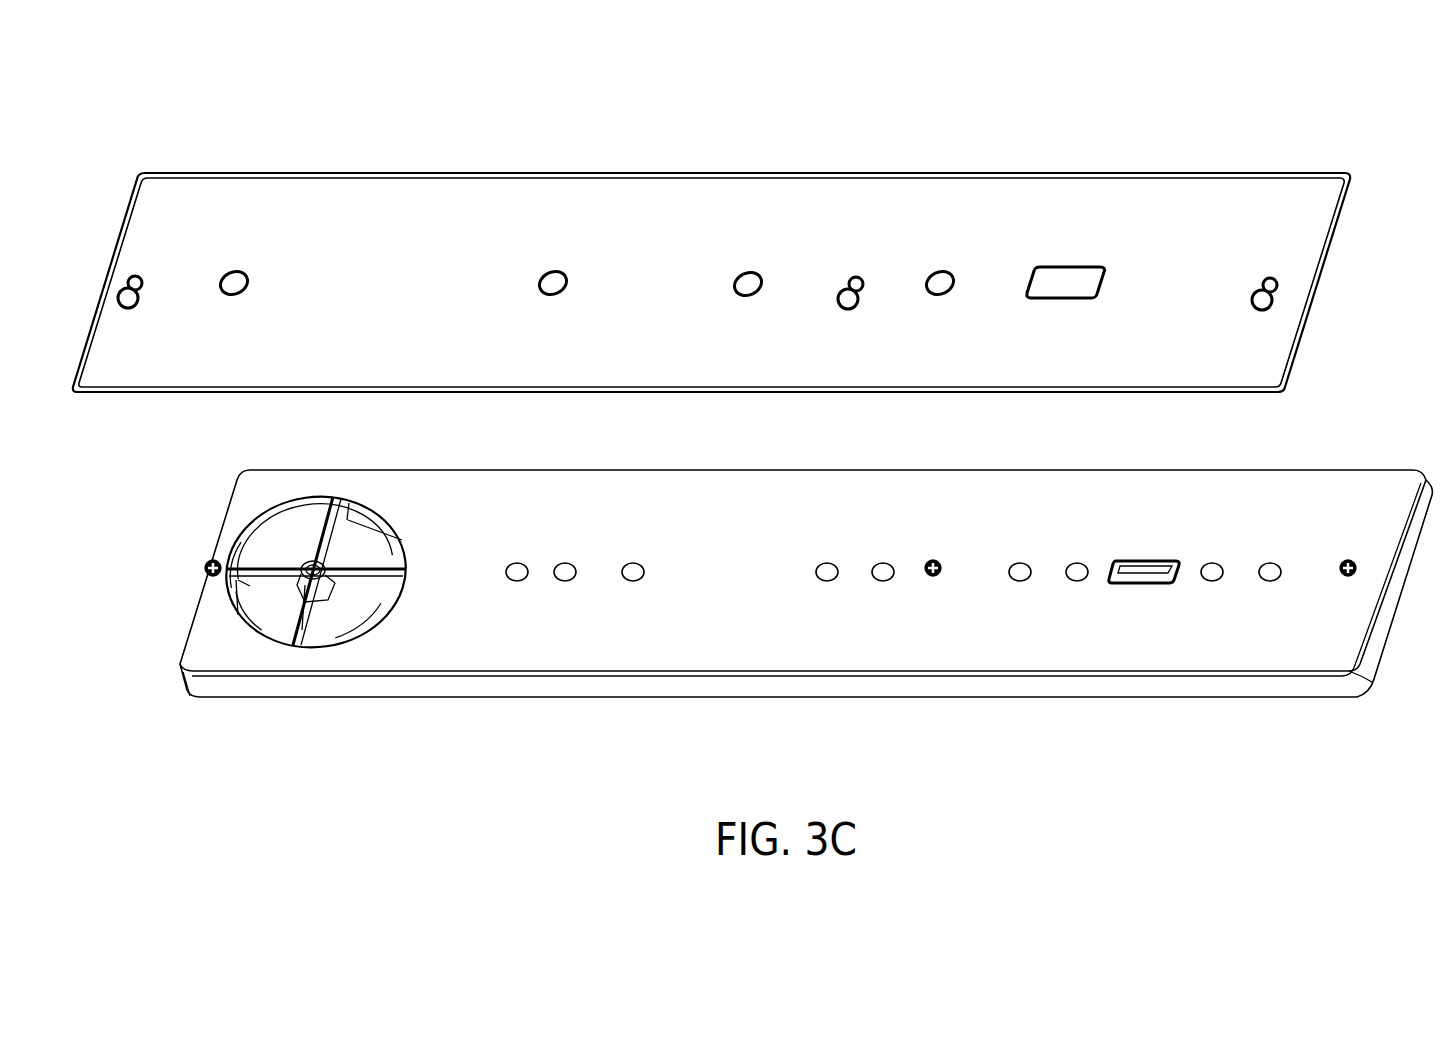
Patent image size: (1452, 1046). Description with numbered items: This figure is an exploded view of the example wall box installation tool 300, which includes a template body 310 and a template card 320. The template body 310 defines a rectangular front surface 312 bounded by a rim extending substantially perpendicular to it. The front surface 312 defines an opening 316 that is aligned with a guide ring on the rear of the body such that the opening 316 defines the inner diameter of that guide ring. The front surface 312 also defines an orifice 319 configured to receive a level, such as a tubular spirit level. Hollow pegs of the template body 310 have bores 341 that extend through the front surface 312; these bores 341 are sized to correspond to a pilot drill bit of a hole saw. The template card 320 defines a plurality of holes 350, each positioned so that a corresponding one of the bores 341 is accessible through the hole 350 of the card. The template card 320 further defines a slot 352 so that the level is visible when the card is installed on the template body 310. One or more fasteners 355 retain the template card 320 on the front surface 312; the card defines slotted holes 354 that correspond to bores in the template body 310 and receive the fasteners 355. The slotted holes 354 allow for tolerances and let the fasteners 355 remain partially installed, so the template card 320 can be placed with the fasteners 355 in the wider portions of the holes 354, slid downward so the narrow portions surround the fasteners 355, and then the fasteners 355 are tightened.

The wall box installation tool 300 is at (128, 136).
The template body 310 is at (806, 608).
The front surface 312 is at (828, 497).
The opening 316 is at (360, 545).
The orifice 319 is at (1146, 578).
The template card 320 is at (646, 196).
The bores 341 is at (633, 572).
The holes 350 is at (238, 289).
The slot 352 is at (1073, 290).
The holes 354 is at (128, 302).
The fasteners 355 is at (209, 565).